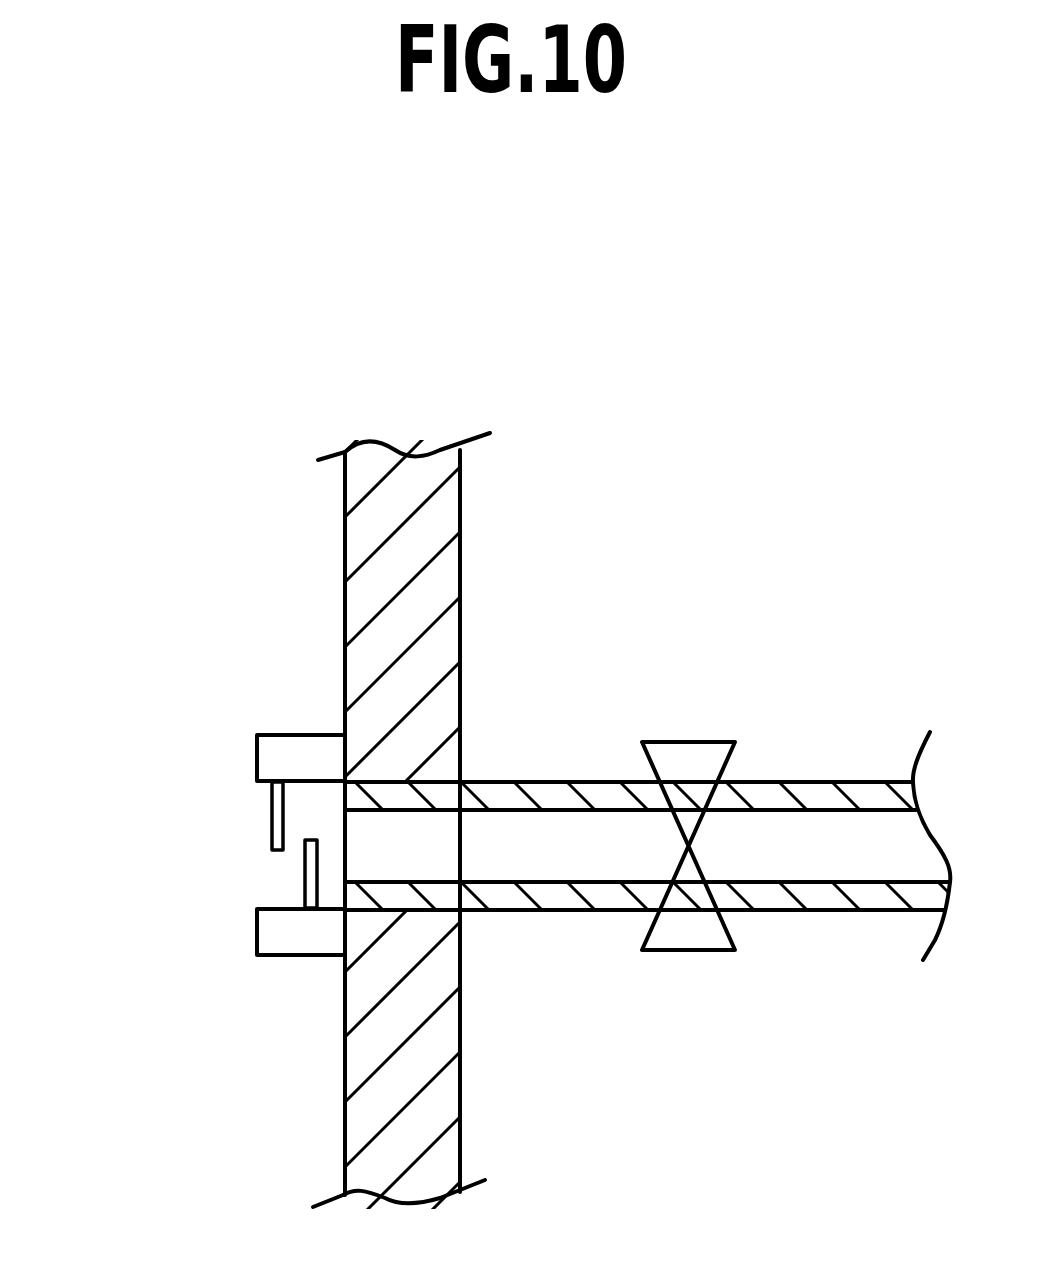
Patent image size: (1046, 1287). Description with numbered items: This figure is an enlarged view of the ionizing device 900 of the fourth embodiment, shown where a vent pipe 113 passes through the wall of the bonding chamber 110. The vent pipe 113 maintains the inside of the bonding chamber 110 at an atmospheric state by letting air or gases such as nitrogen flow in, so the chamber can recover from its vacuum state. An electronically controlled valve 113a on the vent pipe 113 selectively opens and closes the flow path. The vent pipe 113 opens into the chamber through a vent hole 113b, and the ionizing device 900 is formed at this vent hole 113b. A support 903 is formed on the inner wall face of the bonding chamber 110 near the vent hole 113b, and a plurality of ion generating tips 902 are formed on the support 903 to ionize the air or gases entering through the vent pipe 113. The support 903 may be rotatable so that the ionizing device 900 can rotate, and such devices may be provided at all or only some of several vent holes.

The bonding chamber 110 is at (345, 525).
The vent pipe 113 is at (845, 900).
The valve 113a is at (690, 770).
The vent hole 113b is at (427, 852).
The ionizing device 900 is at (257, 750).
The ion generating tips 902 is at (305, 883).
The support 903 is at (287, 940).